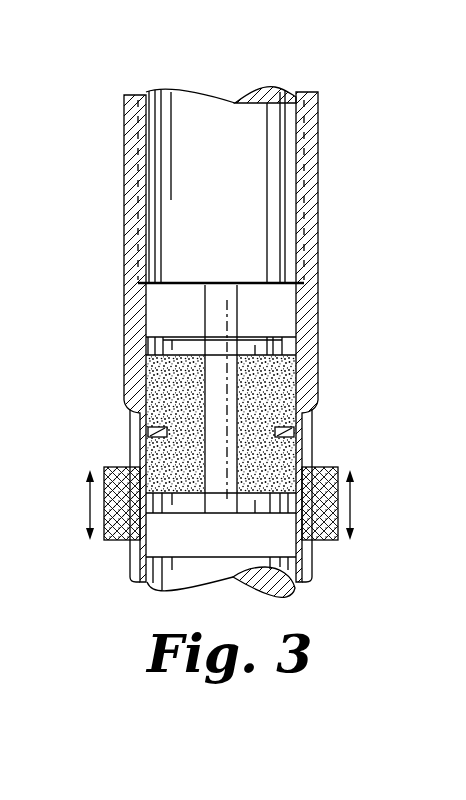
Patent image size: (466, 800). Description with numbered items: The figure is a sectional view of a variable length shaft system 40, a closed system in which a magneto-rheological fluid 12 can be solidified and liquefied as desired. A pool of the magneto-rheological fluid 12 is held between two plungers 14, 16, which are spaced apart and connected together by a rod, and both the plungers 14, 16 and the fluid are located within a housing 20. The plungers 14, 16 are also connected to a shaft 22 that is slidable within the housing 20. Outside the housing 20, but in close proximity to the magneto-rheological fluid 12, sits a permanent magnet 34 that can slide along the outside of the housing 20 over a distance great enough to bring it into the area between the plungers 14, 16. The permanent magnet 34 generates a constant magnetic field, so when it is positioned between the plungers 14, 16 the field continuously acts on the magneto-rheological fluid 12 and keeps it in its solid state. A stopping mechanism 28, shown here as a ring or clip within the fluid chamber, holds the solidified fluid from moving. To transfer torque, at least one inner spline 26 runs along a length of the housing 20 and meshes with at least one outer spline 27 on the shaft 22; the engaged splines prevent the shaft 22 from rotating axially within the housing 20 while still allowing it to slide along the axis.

The variable length shaft system 40 is at (328, 103).
The housing 20 is at (138, 319).
The inner spline 26 is at (135, 192).
The outer spline 27 is at (320, 238).
The shaft 22 is at (255, 160).
The plunger 14 is at (290, 345).
The magneto-rheological fluid 12 is at (270, 398).
The stopping mechanism 28 is at (290, 433).
The plunger 16 is at (248, 500).
The permanent magnet 34 is at (322, 518).